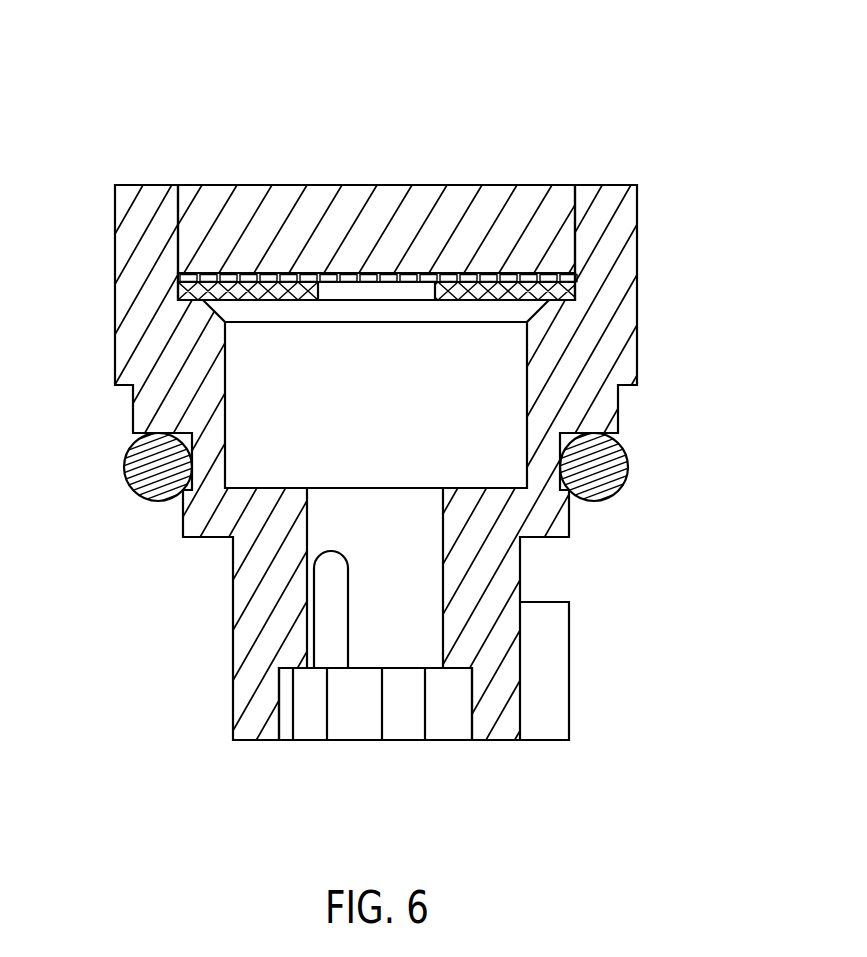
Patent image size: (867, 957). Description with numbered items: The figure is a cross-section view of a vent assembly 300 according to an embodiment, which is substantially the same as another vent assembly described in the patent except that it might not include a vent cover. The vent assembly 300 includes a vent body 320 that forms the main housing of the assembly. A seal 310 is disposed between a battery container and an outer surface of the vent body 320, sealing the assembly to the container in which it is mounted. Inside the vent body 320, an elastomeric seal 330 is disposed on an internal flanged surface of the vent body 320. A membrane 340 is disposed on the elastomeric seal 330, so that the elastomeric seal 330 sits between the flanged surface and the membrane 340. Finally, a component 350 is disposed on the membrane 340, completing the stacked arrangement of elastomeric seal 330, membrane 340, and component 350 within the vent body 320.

The vent assembly 300 is at (132, 97).
The seal 310 is at (633, 465).
The vent body 320 is at (520, 563).
The elastomeric seal 330 is at (577, 292).
The membrane 340 is at (577, 276).
The component 350 is at (577, 198).